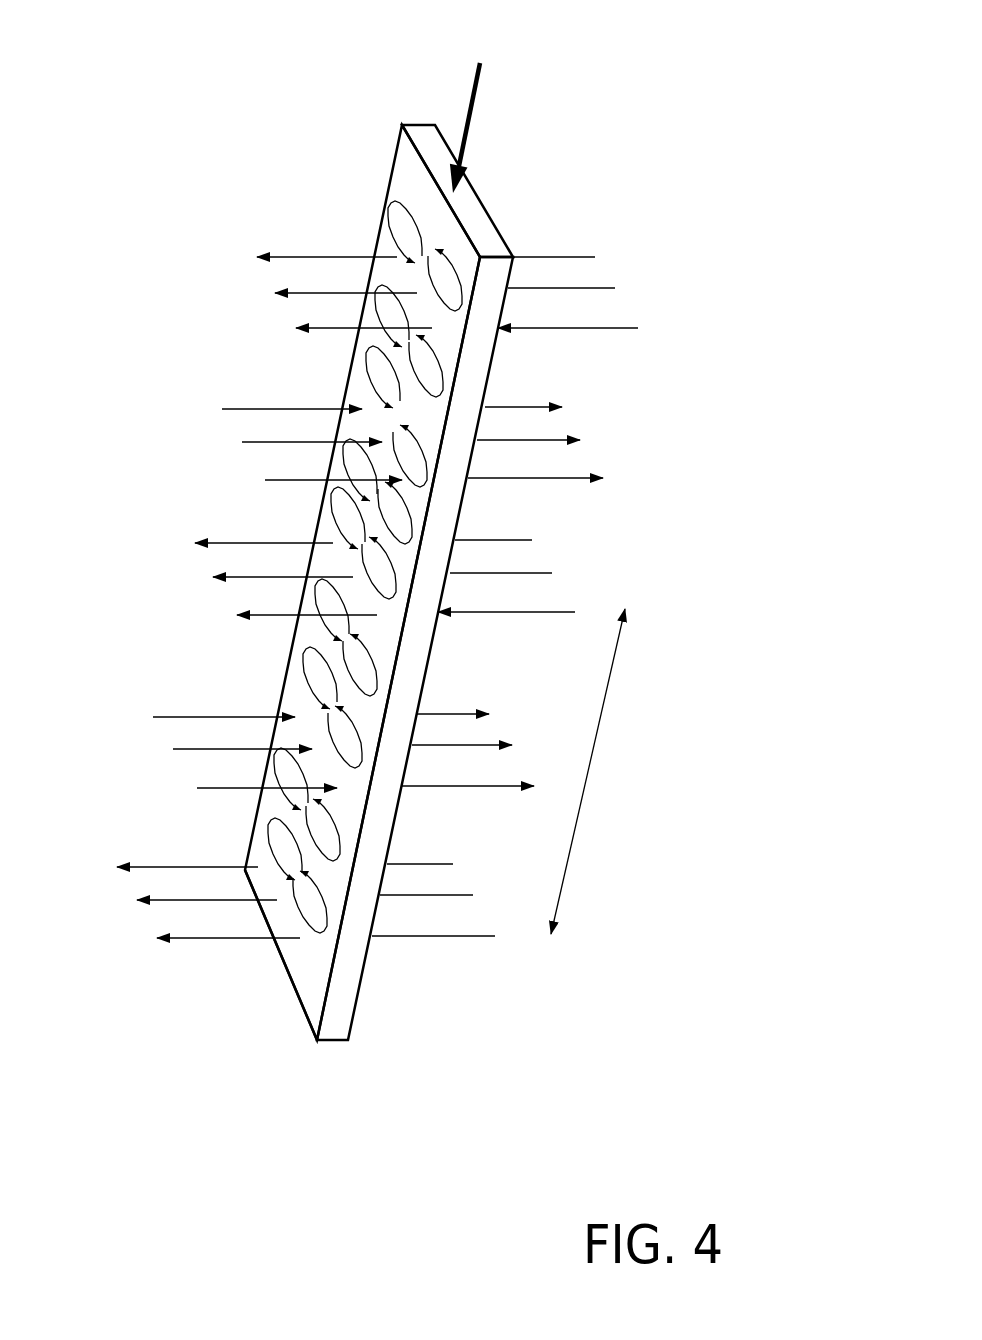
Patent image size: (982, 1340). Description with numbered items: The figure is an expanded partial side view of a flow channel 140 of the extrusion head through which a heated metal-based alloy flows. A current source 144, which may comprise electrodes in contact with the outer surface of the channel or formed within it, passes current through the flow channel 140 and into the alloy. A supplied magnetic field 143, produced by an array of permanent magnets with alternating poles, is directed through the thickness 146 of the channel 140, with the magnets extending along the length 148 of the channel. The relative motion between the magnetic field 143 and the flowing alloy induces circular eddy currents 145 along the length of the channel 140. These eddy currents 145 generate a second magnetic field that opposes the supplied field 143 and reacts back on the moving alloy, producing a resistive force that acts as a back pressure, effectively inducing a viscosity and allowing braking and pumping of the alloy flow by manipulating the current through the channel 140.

The flow channel 140 is at (245, 101).
The magnetic field 143 is at (612, 526).
The current source 144 is at (396, 791).
The eddy currents 145 is at (380, 203).
The thickness 146 is at (337, 1030).
The length 148 is at (605, 781).